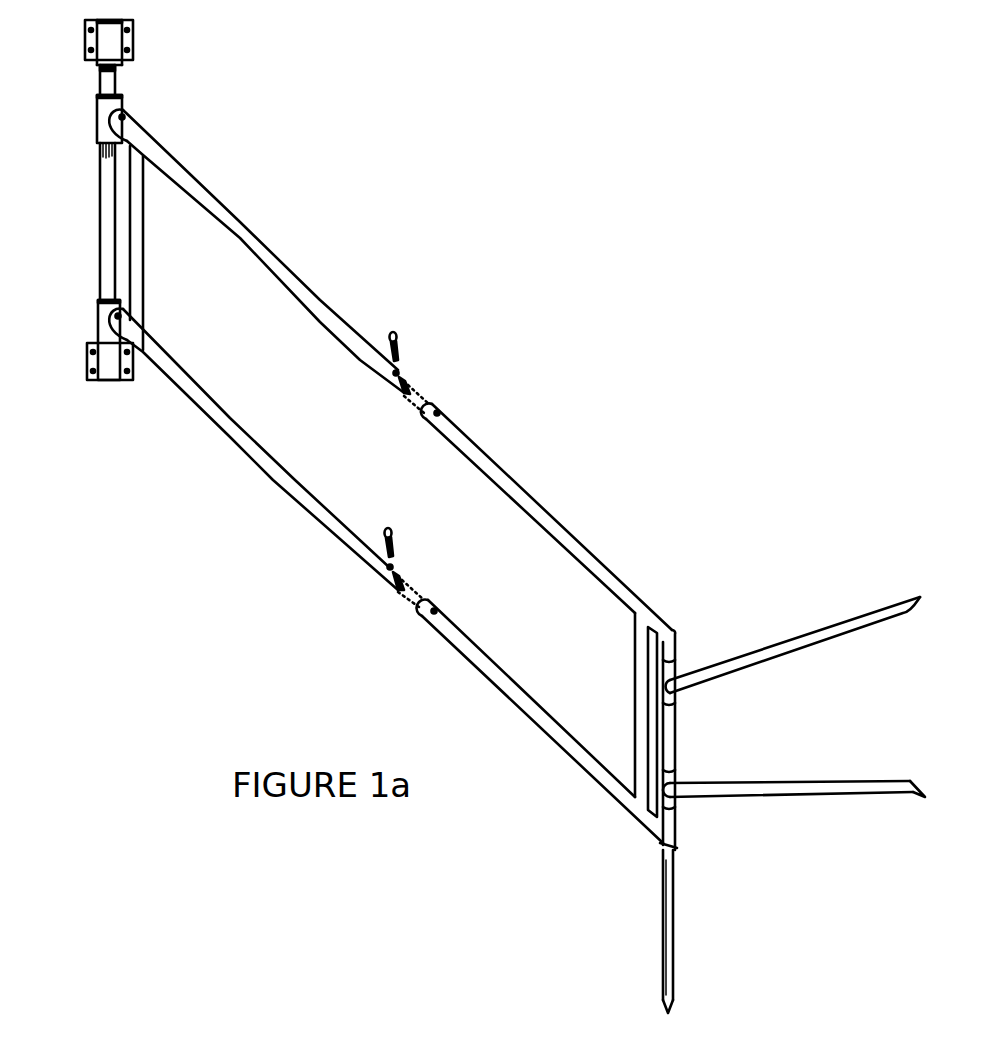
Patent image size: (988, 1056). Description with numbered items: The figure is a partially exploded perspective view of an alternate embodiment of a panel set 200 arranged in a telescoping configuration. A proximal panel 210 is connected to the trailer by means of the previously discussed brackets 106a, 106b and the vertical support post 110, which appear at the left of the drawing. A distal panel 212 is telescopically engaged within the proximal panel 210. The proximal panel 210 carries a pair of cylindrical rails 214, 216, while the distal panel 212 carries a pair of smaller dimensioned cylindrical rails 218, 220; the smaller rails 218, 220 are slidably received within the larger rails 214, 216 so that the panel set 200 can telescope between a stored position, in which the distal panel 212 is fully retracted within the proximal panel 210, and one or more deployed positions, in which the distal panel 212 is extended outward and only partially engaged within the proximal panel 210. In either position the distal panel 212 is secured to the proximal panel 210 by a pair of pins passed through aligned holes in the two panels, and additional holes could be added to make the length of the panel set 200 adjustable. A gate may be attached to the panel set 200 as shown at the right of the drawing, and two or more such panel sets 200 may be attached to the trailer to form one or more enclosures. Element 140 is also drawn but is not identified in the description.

The bracket 106a is at (133, 38).
The bracket 106b is at (107, 378).
The vertical support post 110 is at (115, 80).
The panel set 200 is at (400, 480).
The proximal panel 210 is at (397, 370).
The cylindrical rail 214 is at (251, 256).
The distal panel 212 is at (527, 486).
The cylindrical rail 216 is at (250, 432).
The smaller dimensioned cylindrical rail 218 is at (572, 556).
The smaller dimensioned cylindrical rail 220 is at (522, 688).
The ground stake 140 is at (675, 912).